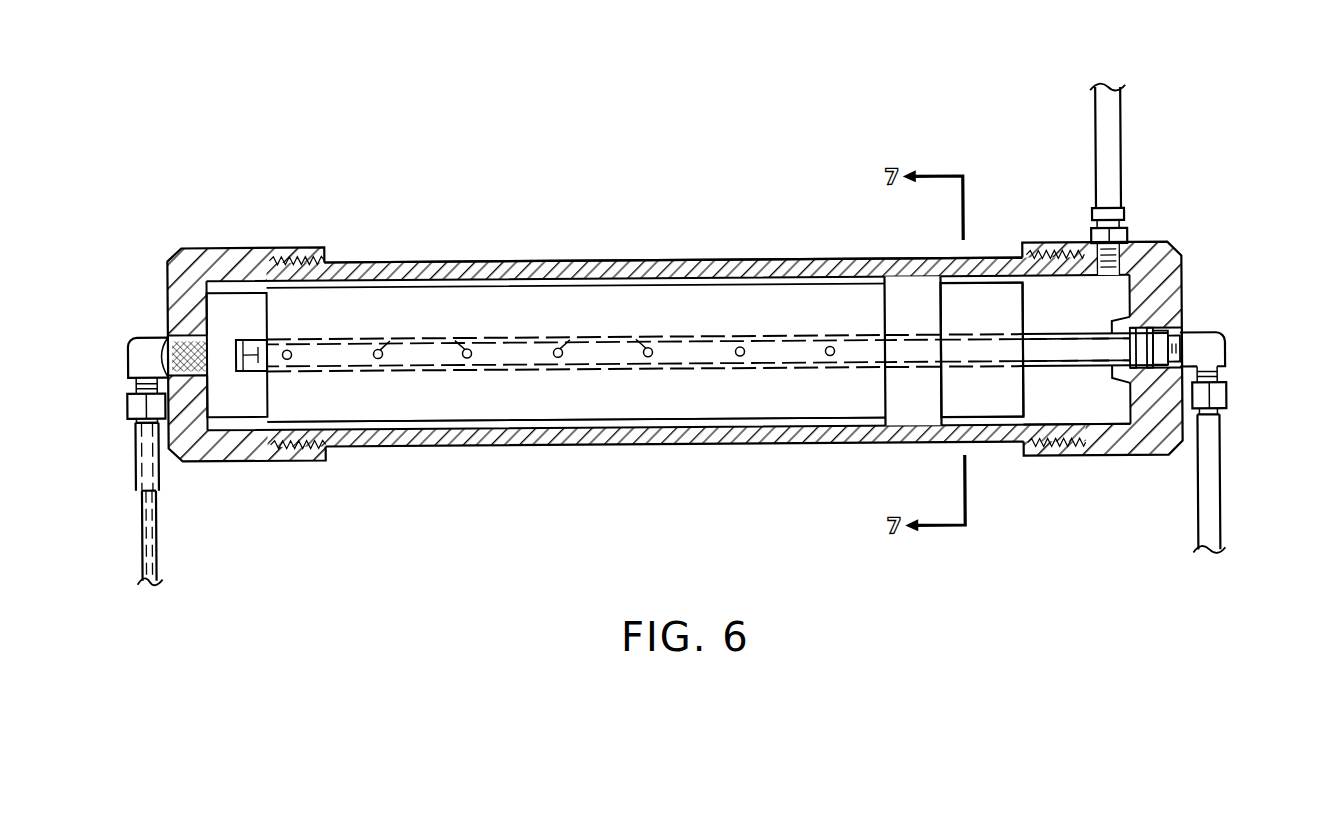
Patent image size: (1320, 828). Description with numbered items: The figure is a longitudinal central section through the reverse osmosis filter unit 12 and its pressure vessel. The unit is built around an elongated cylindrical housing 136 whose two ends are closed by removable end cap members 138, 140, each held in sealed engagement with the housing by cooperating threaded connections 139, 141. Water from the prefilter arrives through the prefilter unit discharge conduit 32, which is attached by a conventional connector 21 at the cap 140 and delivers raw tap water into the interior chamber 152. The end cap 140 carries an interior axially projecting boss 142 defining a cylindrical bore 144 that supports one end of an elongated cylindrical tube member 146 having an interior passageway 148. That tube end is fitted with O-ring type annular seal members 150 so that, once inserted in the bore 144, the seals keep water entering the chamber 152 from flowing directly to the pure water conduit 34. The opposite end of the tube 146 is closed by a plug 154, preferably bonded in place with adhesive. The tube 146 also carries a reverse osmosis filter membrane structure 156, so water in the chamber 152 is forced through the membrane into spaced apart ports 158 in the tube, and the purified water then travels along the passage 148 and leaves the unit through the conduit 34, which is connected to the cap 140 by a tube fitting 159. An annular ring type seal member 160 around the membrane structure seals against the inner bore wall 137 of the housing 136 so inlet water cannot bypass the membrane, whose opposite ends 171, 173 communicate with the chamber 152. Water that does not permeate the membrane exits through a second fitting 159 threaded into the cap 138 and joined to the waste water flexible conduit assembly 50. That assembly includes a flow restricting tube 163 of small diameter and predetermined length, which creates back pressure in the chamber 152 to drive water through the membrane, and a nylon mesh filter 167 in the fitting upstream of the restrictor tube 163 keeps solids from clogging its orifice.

The reverse osmosis filter unit 12 is at (748, 260).
The connector 21 is at (1128, 229).
The prefilter unit discharge conduit 32 is at (1122, 154).
The pure water conduit 34 is at (1219, 483).
The flexible conduit assembly 50 is at (138, 512).
The cylindrical housing 136 is at (573, 260).
The inner bore wall 137 is at (683, 431).
The end cap member 138 is at (257, 244).
The threaded connection 139 is at (300, 253).
The end cap member 140 is at (1100, 460).
The threaded connection 141 is at (1040, 459).
The axially projecting boss 142 is at (1118, 325).
The cylindrical bore 144 is at (1162, 341).
The cylindrical tube member 146 is at (1114, 375).
The interior passageway 148 is at (1040, 341).
The annular seal members 150 is at (1140, 333).
The interior chamber 152 is at (1033, 421).
The plug 154 is at (234, 337).
The reverse osmosis filter membrane structure 156 is at (476, 424).
The ports 158 is at (390, 339).
The tube fitting 159 is at (130, 352).
The annular ring type seal member 160 is at (902, 420).
The flow restricting tube 163 is at (141, 542).
The nylon mesh filter 167 is at (184, 340).
The end of membrane structure 171 is at (265, 396).
The end of membrane structure 173 is at (1025, 386).